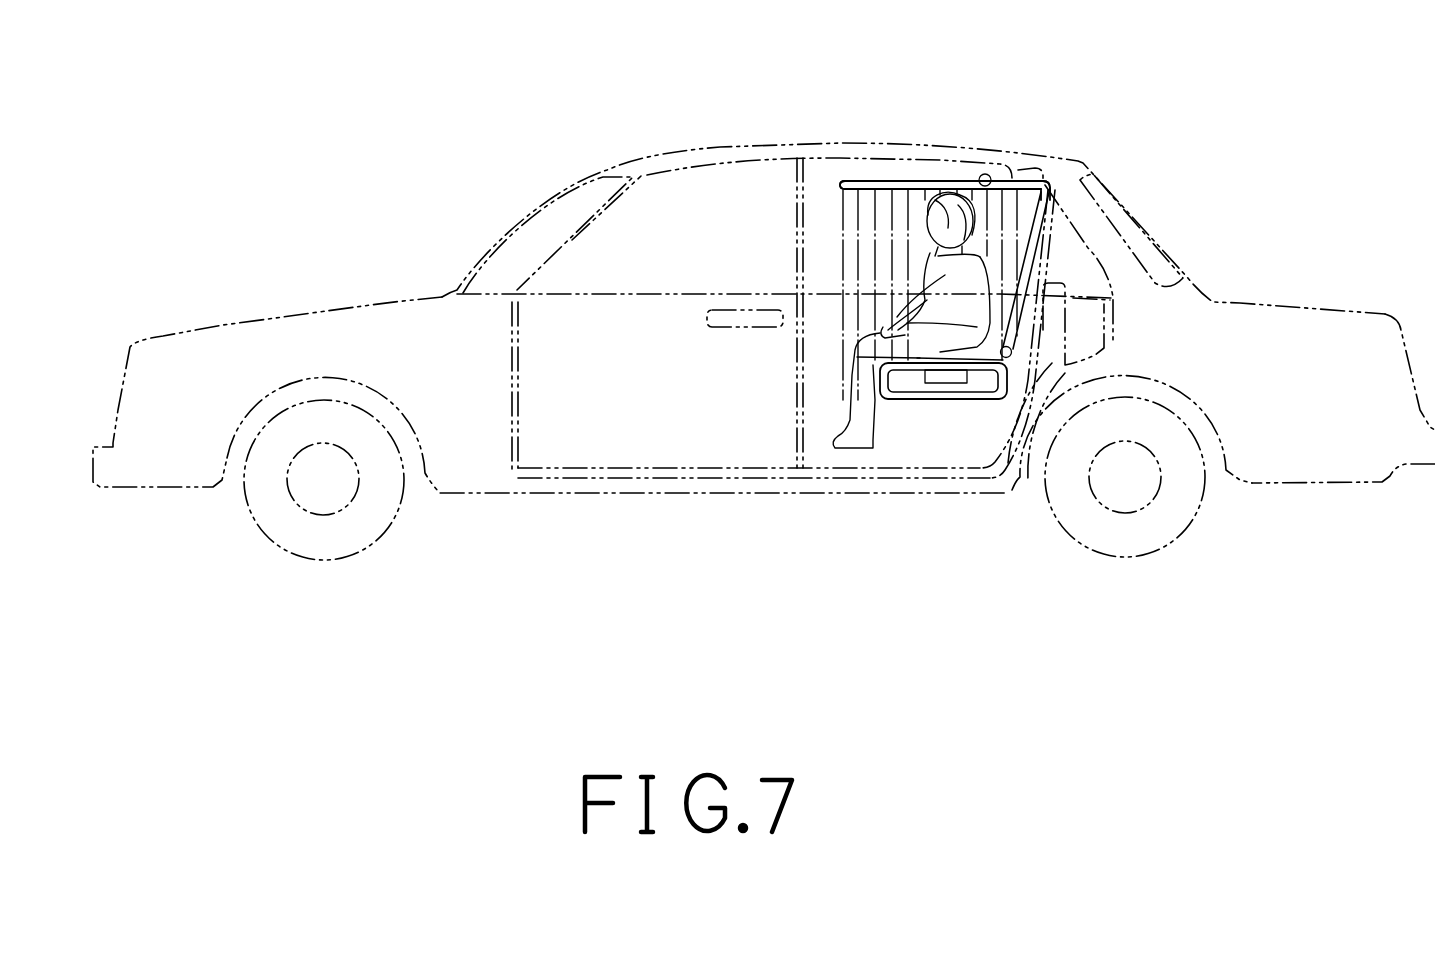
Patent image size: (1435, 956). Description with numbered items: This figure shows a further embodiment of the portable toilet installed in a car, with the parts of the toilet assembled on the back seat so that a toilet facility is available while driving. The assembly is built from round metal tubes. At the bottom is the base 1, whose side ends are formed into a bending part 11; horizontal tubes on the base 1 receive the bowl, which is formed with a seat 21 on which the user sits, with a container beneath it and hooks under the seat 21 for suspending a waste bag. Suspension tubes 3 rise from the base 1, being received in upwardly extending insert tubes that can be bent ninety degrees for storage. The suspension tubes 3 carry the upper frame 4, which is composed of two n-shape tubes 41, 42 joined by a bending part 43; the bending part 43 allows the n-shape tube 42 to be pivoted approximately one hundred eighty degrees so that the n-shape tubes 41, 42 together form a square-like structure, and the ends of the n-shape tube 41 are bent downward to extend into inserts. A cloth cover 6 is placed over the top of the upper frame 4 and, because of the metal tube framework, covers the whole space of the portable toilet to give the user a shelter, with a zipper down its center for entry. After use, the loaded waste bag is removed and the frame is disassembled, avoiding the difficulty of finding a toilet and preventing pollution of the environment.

The base 1 is at (908, 420).
The bending part 11 is at (1012, 357).
The seat 21 is at (958, 374).
The suspension tube 3 is at (1040, 245).
The upper frame 4 is at (931, 158).
The n-shape tube 41 is at (1033, 181).
The n-shape tube 42 is at (868, 182).
The bending part 43 is at (987, 174).
The cloth cover 6 is at (836, 213).